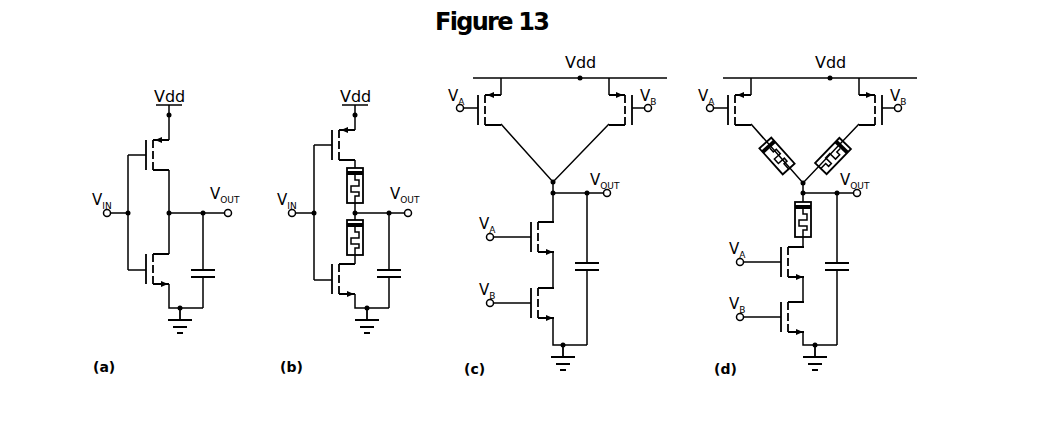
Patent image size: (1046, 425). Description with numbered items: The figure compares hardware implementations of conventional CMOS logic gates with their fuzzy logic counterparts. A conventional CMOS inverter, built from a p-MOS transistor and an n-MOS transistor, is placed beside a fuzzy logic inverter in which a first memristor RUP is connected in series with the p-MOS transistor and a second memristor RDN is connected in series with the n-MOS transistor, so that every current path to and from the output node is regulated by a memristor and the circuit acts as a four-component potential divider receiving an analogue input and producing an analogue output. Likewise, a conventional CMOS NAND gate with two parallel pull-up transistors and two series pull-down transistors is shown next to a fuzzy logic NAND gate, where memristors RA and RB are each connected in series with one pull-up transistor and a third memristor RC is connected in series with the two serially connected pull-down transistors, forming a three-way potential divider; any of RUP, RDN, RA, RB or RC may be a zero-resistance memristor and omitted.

The first memristor RUP is at (340, 185).
The second memristor RDN is at (340, 237).
The memristor RA is at (777, 152).
The memristor RB is at (830, 152).
The third memristor RC is at (790, 219).